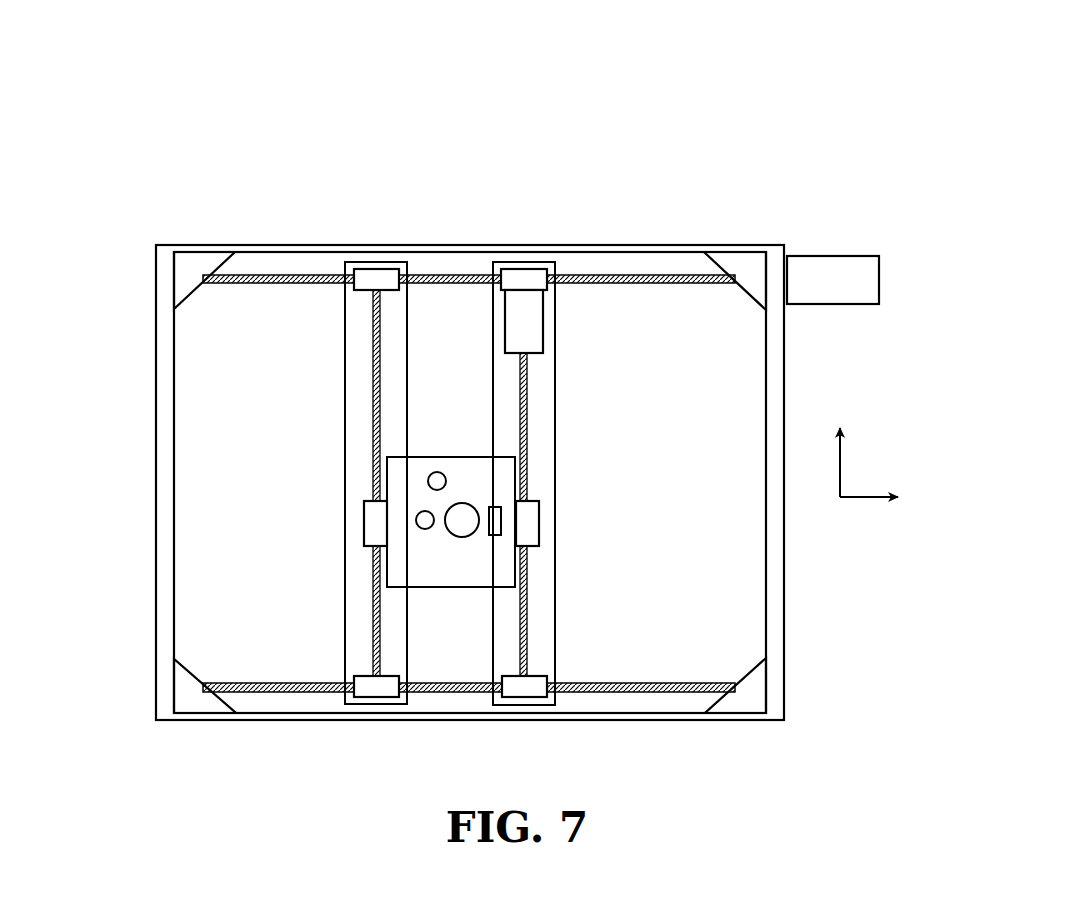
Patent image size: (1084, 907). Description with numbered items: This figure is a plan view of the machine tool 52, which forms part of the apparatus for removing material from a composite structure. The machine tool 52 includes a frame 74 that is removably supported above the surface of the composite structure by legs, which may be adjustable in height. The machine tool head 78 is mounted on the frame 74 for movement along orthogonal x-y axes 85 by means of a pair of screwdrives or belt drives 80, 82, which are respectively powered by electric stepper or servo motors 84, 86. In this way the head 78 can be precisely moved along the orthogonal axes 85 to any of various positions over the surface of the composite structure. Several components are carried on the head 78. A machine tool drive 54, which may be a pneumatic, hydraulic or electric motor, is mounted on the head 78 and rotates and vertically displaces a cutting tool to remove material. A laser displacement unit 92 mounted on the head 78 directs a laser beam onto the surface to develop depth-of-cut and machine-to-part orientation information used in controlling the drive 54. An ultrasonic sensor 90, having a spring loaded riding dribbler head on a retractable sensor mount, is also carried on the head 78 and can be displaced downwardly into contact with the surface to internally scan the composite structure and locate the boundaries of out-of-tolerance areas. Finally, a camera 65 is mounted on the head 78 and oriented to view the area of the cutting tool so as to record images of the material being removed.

The machine tool 52 is at (160, 200).
The frame 74 is at (167, 505).
The screwdrive or belt drive 82 is at (283, 277).
The screwdrive or belt drive 80 is at (525, 412).
The electric stepper or servo motor 84 is at (524, 324).
The machine tool head 78 is at (392, 486).
The camera 65 is at (437, 481).
The ultrasonic sensor 90 is at (425, 520).
The machine tool drive 54 is at (462, 520).
The laser displacement unit 92 is at (497, 522).
The electric stepper or servo motor 86 is at (830, 272).
The orthogonal x-y axes 85 is at (876, 448).